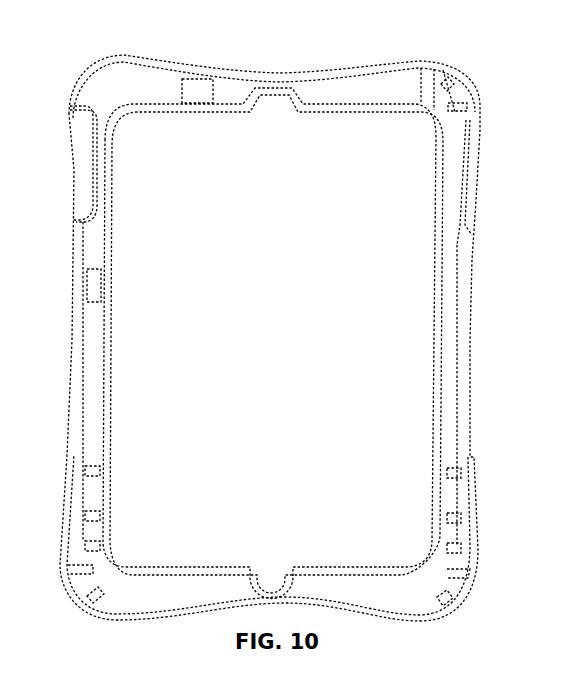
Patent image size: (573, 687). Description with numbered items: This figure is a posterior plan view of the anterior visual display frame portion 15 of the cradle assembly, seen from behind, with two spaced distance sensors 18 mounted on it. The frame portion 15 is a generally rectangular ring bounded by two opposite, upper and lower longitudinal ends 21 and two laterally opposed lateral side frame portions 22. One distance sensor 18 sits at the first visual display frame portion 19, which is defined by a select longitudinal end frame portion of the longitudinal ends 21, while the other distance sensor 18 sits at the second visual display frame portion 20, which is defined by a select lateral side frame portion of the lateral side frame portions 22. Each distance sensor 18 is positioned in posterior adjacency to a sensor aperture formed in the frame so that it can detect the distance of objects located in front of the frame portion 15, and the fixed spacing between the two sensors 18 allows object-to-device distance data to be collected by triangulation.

The anterior visual display frame portion 15 is at (311, 93).
The distance sensor 18 is at (198, 91).
The first visual display frame portion 19 is at (140, 91).
The second visual display frame portion 20 is at (93, 362).
The upper and lower longitudinal ends 21 is at (368, 89).
The lateral side frame portions 22 is at (90, 437).